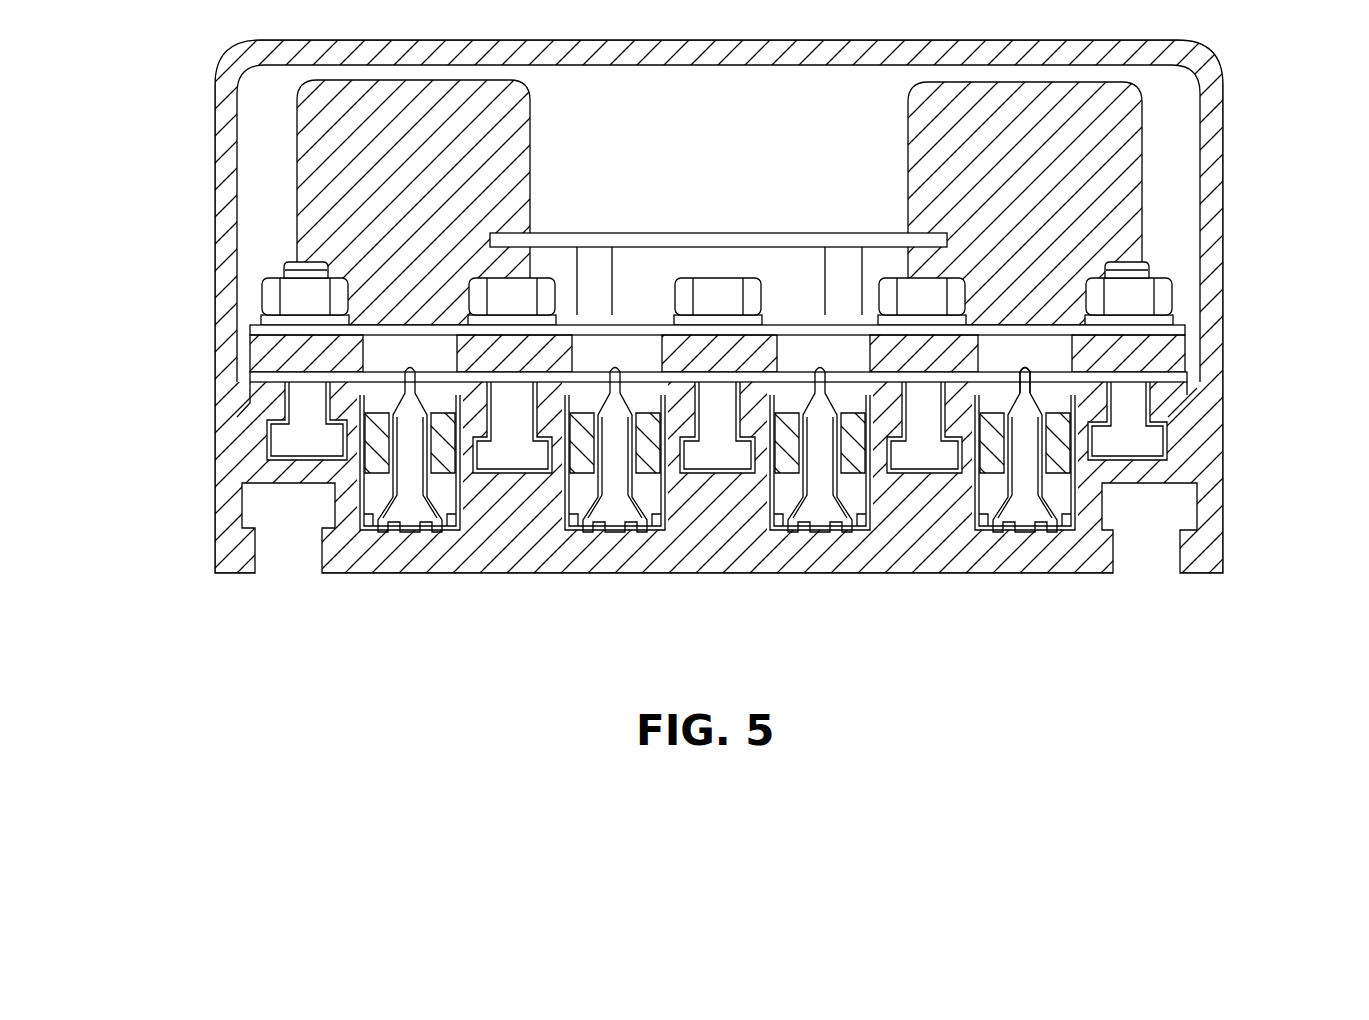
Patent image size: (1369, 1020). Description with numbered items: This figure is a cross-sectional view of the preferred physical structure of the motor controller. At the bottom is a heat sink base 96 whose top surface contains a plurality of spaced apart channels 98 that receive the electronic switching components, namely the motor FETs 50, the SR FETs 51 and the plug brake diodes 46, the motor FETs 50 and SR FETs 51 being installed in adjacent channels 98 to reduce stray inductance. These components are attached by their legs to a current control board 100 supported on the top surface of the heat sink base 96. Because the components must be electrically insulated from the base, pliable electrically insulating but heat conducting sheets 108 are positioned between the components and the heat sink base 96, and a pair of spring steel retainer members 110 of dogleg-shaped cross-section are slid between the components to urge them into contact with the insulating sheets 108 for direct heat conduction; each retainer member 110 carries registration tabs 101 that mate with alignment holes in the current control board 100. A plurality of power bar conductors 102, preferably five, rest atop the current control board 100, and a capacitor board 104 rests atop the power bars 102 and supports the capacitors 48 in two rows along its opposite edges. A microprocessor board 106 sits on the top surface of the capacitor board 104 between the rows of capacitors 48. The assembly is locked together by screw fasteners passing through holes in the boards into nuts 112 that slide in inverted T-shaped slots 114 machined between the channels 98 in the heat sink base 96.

The plug brake diode 46 is at (783, 460).
The capacitor 48 is at (530, 182).
The motor FET 50 is at (370, 460).
The SR FET 51 is at (580, 460).
The heat sink base 96 is at (1207, 540).
The channel 98 is at (408, 493).
The current control board 100 is at (250, 378).
The registration tab 101 is at (1025, 365).
The power bar conductor 102 is at (1187, 350).
The capacitor board 104 is at (250, 328).
The microprocessor board 106 is at (575, 233).
The insulating sheet 108 is at (1058, 525).
The retainer member 110 is at (857, 460).
The nut 112 is at (290, 440).
The inverted T-shaped slot 114 is at (1193, 407).